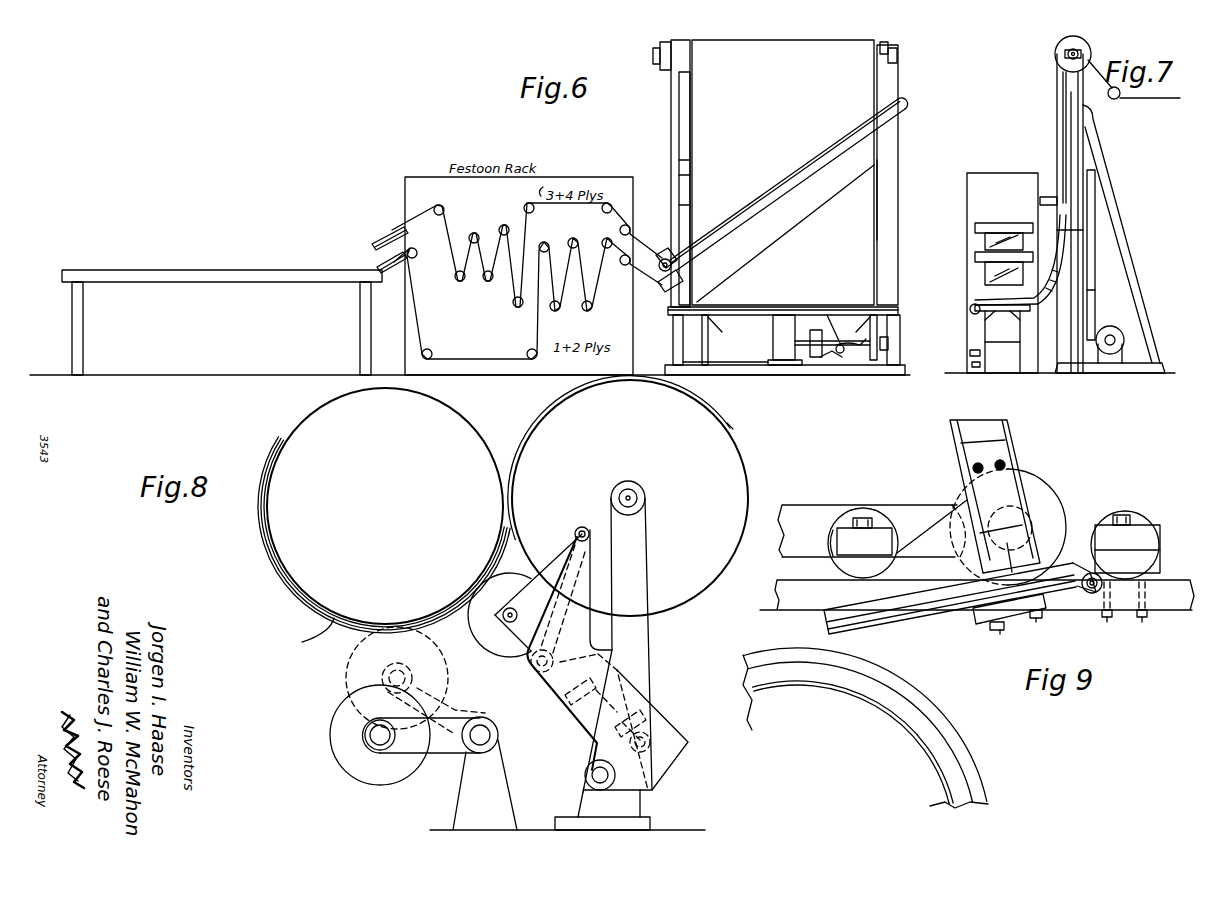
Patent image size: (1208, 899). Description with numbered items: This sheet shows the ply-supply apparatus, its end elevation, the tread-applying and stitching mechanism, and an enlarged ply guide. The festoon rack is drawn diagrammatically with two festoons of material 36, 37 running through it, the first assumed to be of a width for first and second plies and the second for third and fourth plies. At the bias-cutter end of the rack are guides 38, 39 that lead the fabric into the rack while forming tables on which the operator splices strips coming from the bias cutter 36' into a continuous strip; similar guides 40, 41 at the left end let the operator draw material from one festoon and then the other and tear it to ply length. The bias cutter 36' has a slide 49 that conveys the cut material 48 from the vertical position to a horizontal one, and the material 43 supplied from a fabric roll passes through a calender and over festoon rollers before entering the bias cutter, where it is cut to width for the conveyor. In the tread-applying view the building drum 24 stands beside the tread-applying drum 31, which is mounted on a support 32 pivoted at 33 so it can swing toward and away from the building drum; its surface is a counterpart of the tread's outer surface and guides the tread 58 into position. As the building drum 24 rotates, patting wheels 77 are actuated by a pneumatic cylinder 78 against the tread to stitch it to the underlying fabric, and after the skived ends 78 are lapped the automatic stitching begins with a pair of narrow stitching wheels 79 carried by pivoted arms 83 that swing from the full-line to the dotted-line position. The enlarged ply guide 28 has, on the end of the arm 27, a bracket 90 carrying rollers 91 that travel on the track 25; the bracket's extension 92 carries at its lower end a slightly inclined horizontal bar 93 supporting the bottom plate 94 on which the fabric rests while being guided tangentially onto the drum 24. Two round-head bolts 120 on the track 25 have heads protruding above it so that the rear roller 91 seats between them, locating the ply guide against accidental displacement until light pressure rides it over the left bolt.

In FIG. 8, the building drum 24 is at (455, 422).
In FIG. 9, the building drum 24 is at (945, 748).
In FIG. 9, the track 25 is at (1163, 586).
In FIG. 9, the arm 27 is at (802, 514).
In FIG. 9, the ply guide 28 is at (947, 616).
In FIG. 8, the tread-applying drum 31 is at (717, 442).
In FIG. 8, the support 32 is at (640, 562).
In FIG. 8, the pivot 33 is at (585, 779).
In FIG. 6, the festoon of material 36 is at (528, 298).
In FIG. 6, the bias cutter 36' is at (909, 197).
In FIG. 7, the bias cutter 36' is at (1114, 239).
In FIG. 6, the festoon of material 37 is at (535, 208).
In FIG. 6, the guide 38 is at (648, 283).
In FIG. 7, the guide 38 is at (975, 282).
In FIG. 6, the guide 39 is at (645, 255).
In FIG. 7, the guide 39 is at (975, 242).
In FIG. 6, the guide 40 is at (384, 270).
In FIG. 6, the guide 41 is at (375, 246).
In FIG. 6, the material 43 is at (783, 172).
In FIG. 7, the material 43 is at (1148, 100).
In FIG. 6, the cut material 48 is at (778, 225).
In FIG. 7, the slide 49 is at (1034, 302).
In FIG. 8, the tread 58 is at (307, 636).
In FIG. 8, the patting wheels 77 is at (483, 620).
In FIG. 8, the pneumatic cylinder 78 is at (280, 436).
In FIG. 8, the stitching wheels 79 is at (362, 668).
In FIG. 8, the pivoted arms 83 is at (456, 702).
In FIG. 9, the bracket 90 is at (1046, 505).
In FIG. 9, the rollers 91 is at (872, 512).
In FIG. 9, the extension 92 is at (1006, 478).
In FIG. 9, the bar 93 is at (1031, 632).
In FIG. 9, the bottom plate 94 is at (894, 630).
In FIG. 9, the round-head bolts 120 is at (1140, 600).